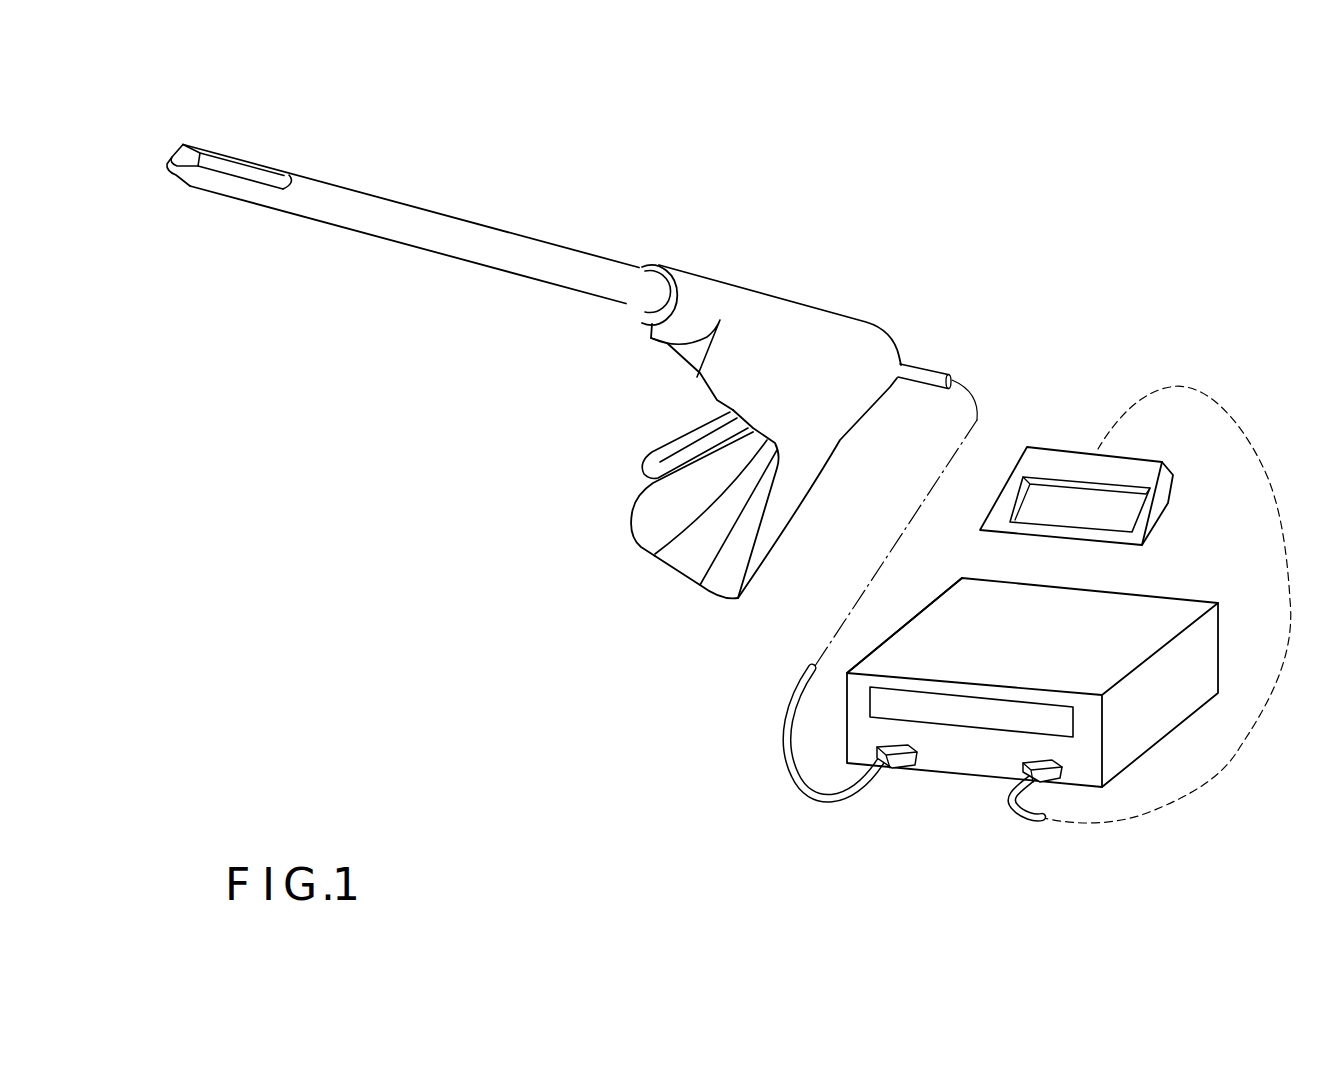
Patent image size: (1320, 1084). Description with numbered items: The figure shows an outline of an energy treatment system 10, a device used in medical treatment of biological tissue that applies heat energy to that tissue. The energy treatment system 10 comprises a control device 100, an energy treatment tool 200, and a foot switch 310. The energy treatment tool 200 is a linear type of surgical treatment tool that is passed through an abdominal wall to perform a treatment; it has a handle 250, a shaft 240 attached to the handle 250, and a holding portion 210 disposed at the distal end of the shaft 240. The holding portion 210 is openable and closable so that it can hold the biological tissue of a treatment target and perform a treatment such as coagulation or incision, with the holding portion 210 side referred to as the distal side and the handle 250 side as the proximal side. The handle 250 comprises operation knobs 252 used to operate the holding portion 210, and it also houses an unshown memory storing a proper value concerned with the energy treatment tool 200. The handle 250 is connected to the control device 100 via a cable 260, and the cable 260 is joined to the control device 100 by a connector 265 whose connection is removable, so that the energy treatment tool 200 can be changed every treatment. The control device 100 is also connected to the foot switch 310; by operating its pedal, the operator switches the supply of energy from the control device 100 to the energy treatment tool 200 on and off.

The energy treatment system 10 is at (446, 687).
The control device 100 is at (978, 797).
The energy treatment tool 200 is at (770, 258).
The holding portion 210 is at (241, 160).
The shaft 240 is at (488, 242).
The handle 250 is at (842, 327).
The operation knobs 252 is at (612, 508).
The cable 260 is at (924, 357).
The connector 265 is at (902, 769).
The foot switch 310 is at (1147, 460).